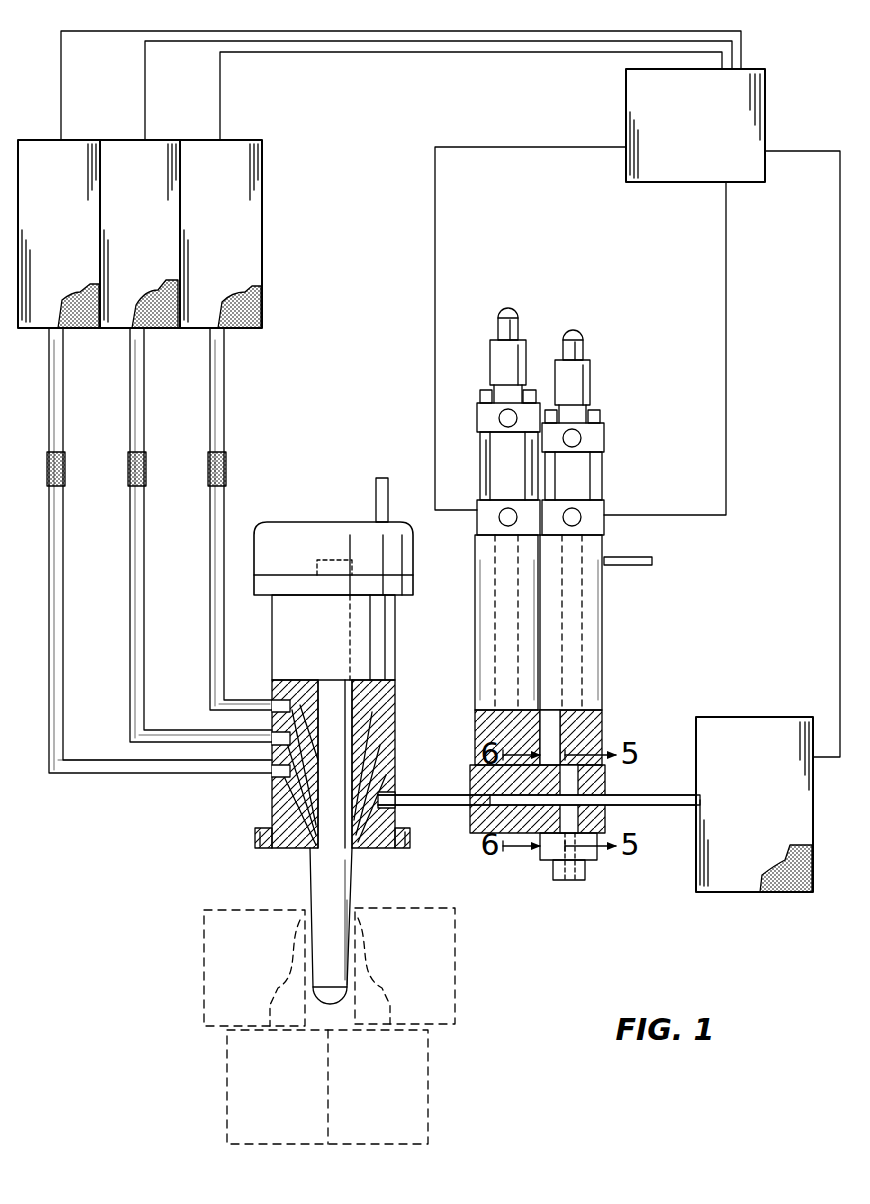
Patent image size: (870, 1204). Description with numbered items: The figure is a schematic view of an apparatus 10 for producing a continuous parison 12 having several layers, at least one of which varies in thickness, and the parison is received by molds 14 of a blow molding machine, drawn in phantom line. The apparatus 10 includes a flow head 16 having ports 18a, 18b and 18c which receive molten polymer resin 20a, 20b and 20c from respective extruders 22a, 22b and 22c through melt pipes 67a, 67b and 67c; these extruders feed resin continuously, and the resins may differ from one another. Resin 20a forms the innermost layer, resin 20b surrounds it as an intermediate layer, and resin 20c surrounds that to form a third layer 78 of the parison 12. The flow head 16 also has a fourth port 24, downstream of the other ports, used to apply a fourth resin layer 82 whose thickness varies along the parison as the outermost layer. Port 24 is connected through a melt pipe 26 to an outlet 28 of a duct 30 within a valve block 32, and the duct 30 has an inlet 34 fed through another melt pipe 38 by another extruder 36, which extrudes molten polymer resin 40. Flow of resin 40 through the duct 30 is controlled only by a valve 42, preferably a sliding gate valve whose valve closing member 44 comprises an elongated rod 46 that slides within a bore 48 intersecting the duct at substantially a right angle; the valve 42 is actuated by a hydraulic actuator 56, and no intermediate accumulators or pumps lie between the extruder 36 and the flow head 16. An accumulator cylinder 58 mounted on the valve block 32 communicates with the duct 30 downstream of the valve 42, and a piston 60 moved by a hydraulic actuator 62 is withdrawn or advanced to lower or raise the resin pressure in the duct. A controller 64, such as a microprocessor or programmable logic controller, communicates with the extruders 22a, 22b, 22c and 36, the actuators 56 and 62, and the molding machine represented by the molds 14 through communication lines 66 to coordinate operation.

The apparatus 10 is at (336, 291).
The parison 12 is at (352, 886).
The molds 14 is at (455, 963).
The flow head 16 is at (395, 640).
The port 18a is at (285, 695).
The port 18b is at (272, 742).
The port 18c is at (272, 776).
The molten polymer resin 20a is at (225, 475).
The molten polymer resin 20b is at (145, 475).
The molten polymer resin 20c is at (64, 475).
The extruder 22a is at (221, 234).
The extruder 22b is at (140, 234).
The extruder 22c is at (59, 234).
The fourth port 24 is at (380, 850).
The melt pipe 26 is at (445, 808).
The outlet 28 is at (478, 796).
The duct 30 is at (540, 836).
The valve block 32 is at (472, 842).
The inlet 34 is at (600, 794).
The extruder 36 is at (754, 804).
The melt pipe 38 is at (710, 790).
The molten polymer resin 40 is at (790, 893).
The valve 42 is at (590, 818).
The valve closing member 44 is at (572, 862).
The rod 46 is at (578, 613).
The bore 48 is at (598, 790).
The hydraulic actuator 56 is at (604, 522).
The accumulator cylinder 58 is at (478, 754).
The piston 60 is at (478, 770).
The hydraulic actuator 62 is at (477, 518).
The controller 64 is at (695, 125).
The communication lines 66 is at (352, 52).
The melt pipe 67a is at (216, 393).
The melt pipe 67b is at (136, 393).
The melt pipe 67c is at (55, 393).
The third layer 78 is at (310, 880).
The fourth resin layer 82 is at (308, 856).